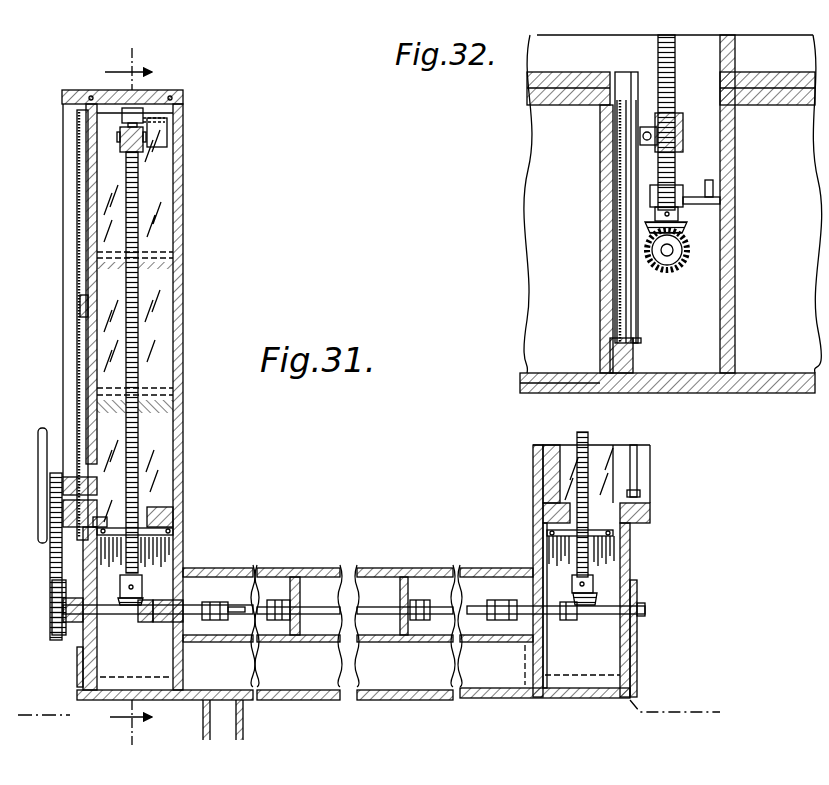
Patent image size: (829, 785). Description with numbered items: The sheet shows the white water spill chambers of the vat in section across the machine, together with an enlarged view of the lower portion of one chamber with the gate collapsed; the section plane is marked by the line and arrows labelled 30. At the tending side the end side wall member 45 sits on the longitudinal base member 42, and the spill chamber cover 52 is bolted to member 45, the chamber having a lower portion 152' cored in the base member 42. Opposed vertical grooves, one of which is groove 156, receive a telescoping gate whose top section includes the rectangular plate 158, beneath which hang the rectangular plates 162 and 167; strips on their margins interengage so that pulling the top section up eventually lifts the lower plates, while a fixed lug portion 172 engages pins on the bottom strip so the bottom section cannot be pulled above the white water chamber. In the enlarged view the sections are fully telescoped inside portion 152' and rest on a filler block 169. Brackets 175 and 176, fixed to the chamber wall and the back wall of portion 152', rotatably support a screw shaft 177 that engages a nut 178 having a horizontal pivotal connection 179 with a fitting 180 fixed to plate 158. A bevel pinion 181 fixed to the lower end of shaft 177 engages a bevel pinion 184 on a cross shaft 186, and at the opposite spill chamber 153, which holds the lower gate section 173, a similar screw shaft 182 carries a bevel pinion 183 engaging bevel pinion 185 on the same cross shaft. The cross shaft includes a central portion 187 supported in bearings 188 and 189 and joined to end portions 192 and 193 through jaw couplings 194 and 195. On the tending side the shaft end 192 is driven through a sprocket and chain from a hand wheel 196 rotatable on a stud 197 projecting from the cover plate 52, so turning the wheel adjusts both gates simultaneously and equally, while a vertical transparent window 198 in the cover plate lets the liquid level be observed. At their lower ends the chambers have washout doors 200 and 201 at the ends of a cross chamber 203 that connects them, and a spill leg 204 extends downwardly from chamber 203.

In FIG. 31, the section line 30 is at (128, 393).
In FIG. 32, the longitudinal base member 42 is at (760, 393).
In FIG. 31, the end side wall member 45 is at (181, 290).
In FIG. 32, the end side wall member 45 is at (735, 45).
In FIG. 31, the spill chamber cover 52 is at (80, 125).
In FIG. 32, the lower portion of chamber 152' is at (692, 239).
In FIG. 31, the white water spill chamber 153 is at (540, 468).
In FIG. 32, the vertically extending groove 156 is at (635, 318).
In FIG. 31, the rectangular plate 158 is at (162, 200).
In FIG. 32, the rectangular plate 162 is at (622, 272).
In FIG. 32, the rectangular plate 167 is at (605, 240).
In FIG. 32, the filler block 169 is at (632, 368).
In FIG. 32, the fixed lug portion 172 is at (628, 85).
In FIG. 31, the lower section of telescoping gate 173 is at (600, 467).
In FIG. 31, the bracket 175 is at (143, 113).
In FIG. 32, the bracket 176 is at (713, 203).
In FIG. 32, the screw shaft 177 is at (676, 165).
In FIG. 31, the nut 178 is at (143, 140).
In FIG. 32, the nut 178 is at (684, 135).
In FIG. 32, the horizontal pivotal connection 179 is at (643, 142).
In FIG. 32, the fitting 180 is at (612, 155).
In FIG. 31, the bevel pinion 181 is at (124, 603).
In FIG. 32, the bevel pinion 181 is at (688, 230).
In FIG. 31, the screw shaft 182 is at (590, 485).
In FIG. 31, the bevel pinion 183 is at (597, 588).
In FIG. 31, the bevel pinion 184 is at (145, 622).
In FIG. 32, the bevel pinion 184 is at (667, 273).
In FIG. 31, the bevel pinion 185 is at (576, 625).
In FIG. 31, the cross shaft 186 is at (652, 603).
In FIG. 31, the central portion of cross shaft 187 is at (320, 607).
In FIG. 31, the bearing 188 is at (290, 600).
In FIG. 31, the bearing 189 is at (407, 600).
In FIG. 31, the shaft end portion 192 is at (63, 610).
In FIG. 31, the shaft end portion 193 is at (570, 620).
In FIG. 31, the jaw coupling 194 is at (60, 630).
In FIG. 31, the jaw coupling 195 is at (55, 580).
In FIG. 31, the hand wheel 196 is at (49, 540).
In FIG. 31, the stud 197 is at (44, 430).
In FIG. 31, the transparent window 198 is at (80, 228).
In FIG. 31, the washout door 200 is at (80, 668).
In FIG. 31, the washout door 201 is at (637, 668).
In FIG. 31, the cross chamber 203 is at (392, 675).
In FIG. 31, the spill leg 204 is at (243, 725).